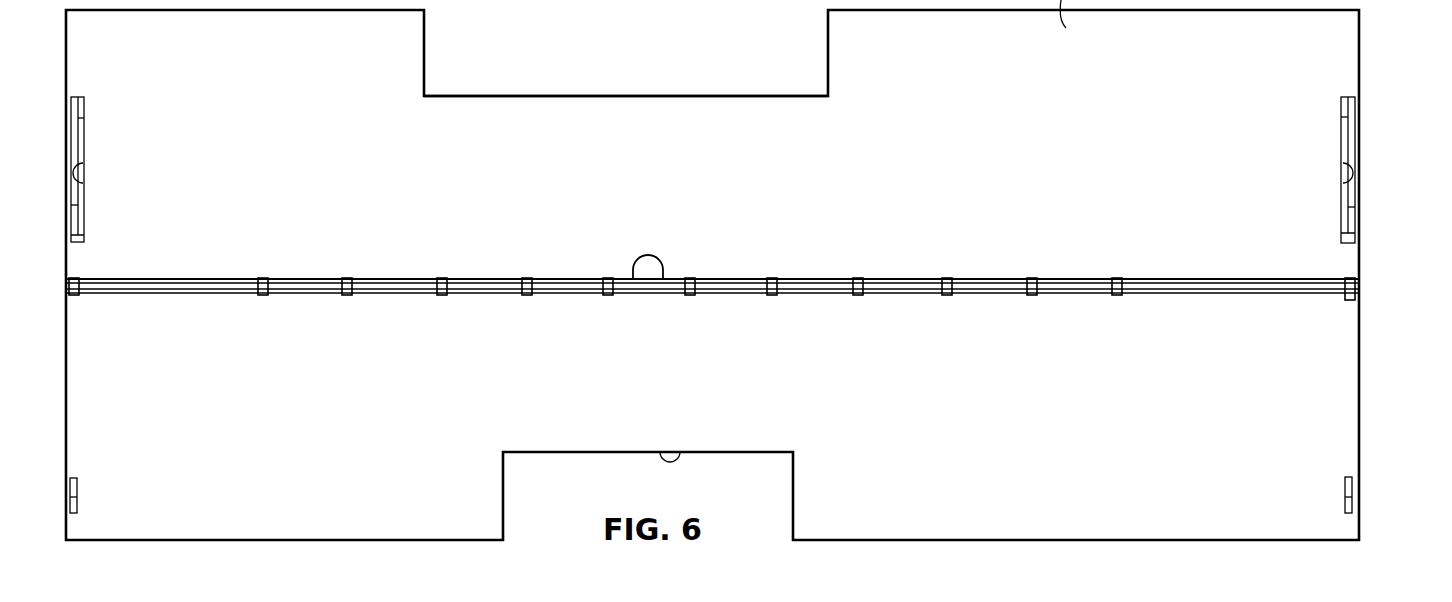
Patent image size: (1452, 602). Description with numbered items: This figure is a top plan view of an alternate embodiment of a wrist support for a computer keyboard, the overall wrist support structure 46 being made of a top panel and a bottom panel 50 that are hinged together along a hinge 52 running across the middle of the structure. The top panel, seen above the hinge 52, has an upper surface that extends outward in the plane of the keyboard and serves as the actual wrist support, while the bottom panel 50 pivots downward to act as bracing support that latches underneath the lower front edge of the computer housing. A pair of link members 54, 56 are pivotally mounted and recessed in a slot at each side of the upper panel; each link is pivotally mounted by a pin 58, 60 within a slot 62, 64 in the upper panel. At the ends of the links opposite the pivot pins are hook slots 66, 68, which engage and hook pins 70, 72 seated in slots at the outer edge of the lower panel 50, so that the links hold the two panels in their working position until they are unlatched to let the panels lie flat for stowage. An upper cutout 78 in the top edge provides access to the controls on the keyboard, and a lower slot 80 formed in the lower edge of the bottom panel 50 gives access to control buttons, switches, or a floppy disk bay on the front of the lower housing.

The wrist support structure 46 is at (1372, 116).
The bottom panel 50 is at (1335, 386).
The hinge 52 is at (1357, 293).
The link member 54 is at (76, 148).
The link member 56 is at (1355, 146).
The pin 58 is at (80, 118).
The pin 60 is at (1345, 117).
The slot 62 is at (74, 181).
The slot 64 is at (1348, 183).
The hook slot 66 is at (78, 206).
The hook slot 68 is at (1354, 207).
The pin 70 is at (78, 498).
The pin 72 is at (1345, 500).
The upper cutout 78 is at (773, 96).
The lower slot 80 is at (680, 452).